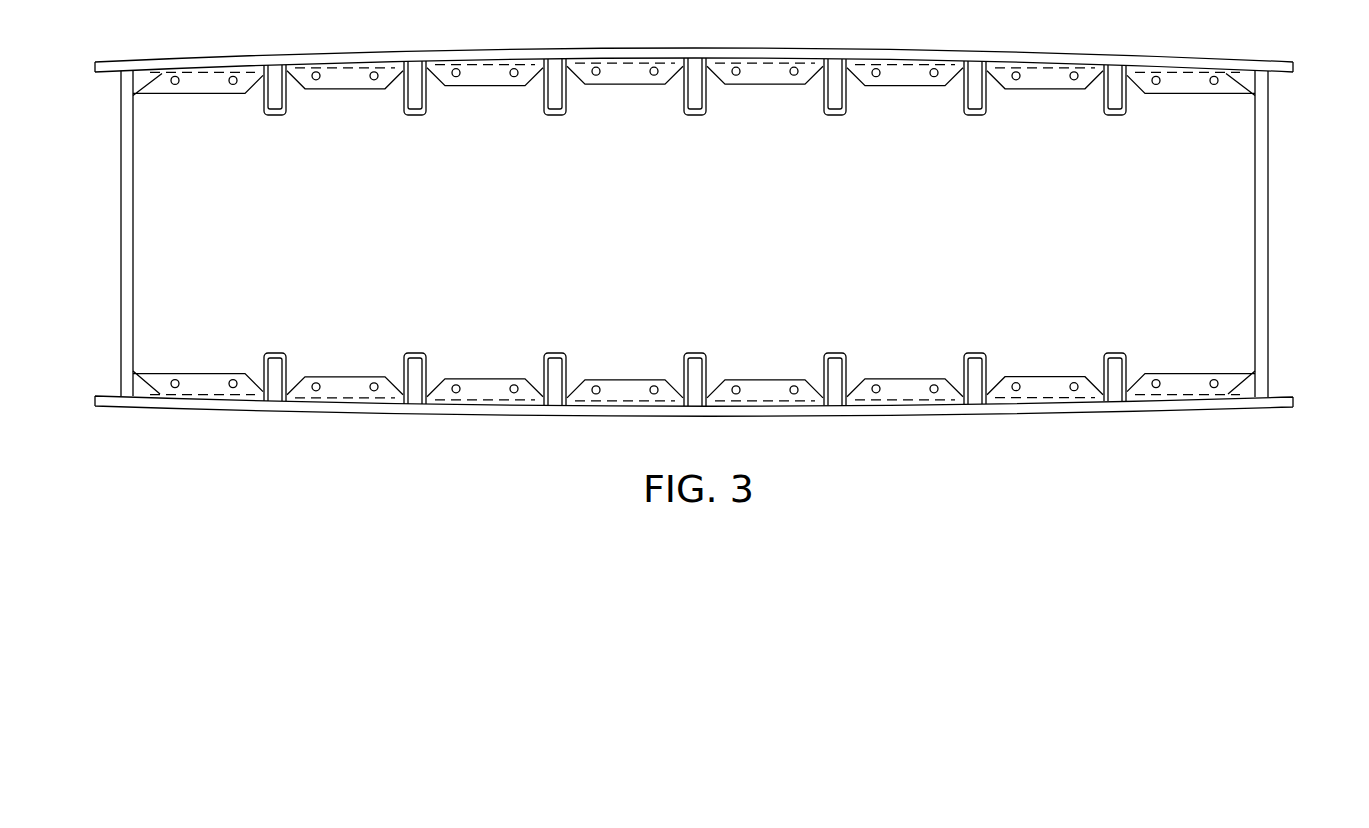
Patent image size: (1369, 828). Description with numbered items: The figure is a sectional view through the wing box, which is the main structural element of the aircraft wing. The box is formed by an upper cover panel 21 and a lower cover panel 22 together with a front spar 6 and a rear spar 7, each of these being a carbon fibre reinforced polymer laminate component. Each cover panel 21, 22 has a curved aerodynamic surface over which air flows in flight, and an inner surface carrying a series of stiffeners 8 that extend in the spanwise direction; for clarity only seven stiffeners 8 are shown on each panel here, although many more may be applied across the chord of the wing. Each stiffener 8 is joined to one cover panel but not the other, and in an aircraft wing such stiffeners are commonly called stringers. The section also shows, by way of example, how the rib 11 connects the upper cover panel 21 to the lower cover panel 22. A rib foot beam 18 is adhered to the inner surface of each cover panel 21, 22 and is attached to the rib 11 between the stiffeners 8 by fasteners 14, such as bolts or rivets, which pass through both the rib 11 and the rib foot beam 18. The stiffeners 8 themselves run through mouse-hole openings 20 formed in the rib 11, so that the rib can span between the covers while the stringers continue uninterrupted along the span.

The front spar 6 is at (125, 222).
The rear spar 7 is at (1268, 268).
The stiffener 8 is at (547, 92).
The rib 11 is at (635, 242).
The fastener 14 is at (380, 80).
The rib foot beam 18 is at (773, 88).
The mouse-hole opening 20 is at (973, 115).
The upper cover panel 21 is at (1297, 63).
The lower cover panel 22 is at (1297, 398).